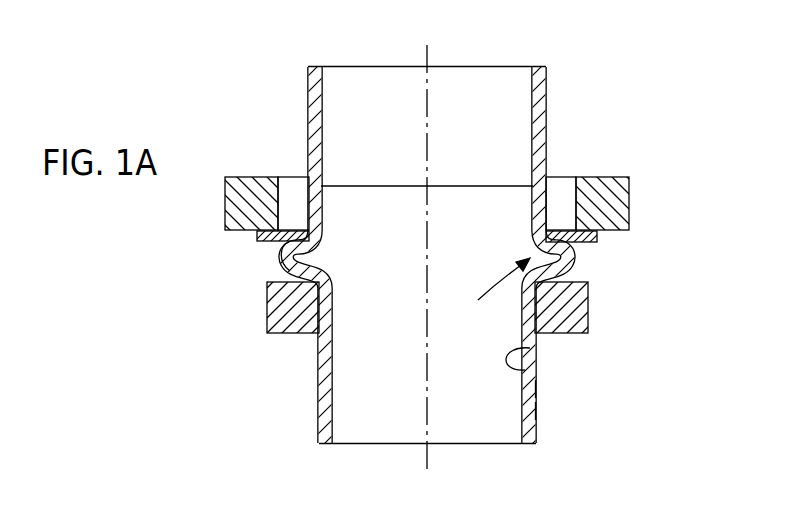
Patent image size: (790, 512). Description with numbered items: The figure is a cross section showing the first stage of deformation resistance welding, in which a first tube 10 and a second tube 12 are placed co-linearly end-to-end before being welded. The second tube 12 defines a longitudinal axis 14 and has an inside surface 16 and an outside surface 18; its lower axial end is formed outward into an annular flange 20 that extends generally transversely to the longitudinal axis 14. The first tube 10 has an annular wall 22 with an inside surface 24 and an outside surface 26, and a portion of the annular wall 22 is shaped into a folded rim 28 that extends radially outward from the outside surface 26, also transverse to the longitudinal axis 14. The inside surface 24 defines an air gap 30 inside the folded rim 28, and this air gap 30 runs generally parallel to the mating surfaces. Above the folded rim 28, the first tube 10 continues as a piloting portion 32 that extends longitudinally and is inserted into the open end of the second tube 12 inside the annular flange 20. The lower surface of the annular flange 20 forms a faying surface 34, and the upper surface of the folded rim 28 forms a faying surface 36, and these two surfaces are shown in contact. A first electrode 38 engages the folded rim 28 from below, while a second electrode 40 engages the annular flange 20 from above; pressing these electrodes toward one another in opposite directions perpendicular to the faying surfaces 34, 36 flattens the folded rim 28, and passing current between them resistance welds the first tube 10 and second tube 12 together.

The first tube 10 is at (537, 443).
The second tube 12 is at (547, 115).
The longitudinal axis 14 is at (427, 100).
The inside surface 16 is at (322, 76).
The outside surface 18 is at (547, 77).
The annular flange 20 is at (587, 256).
The annular wall 22 is at (535, 388).
The inside surface 24 is at (525, 370).
The outside surface 26 is at (536, 410).
The folded rim 28 is at (585, 246).
The air gap 30 is at (487, 288).
The piloting portion 32 is at (528, 214).
The faying surface 34 is at (262, 240).
The faying surface 36 is at (286, 253).
The first electrode 38 is at (292, 334).
The second electrode 40 is at (246, 177).